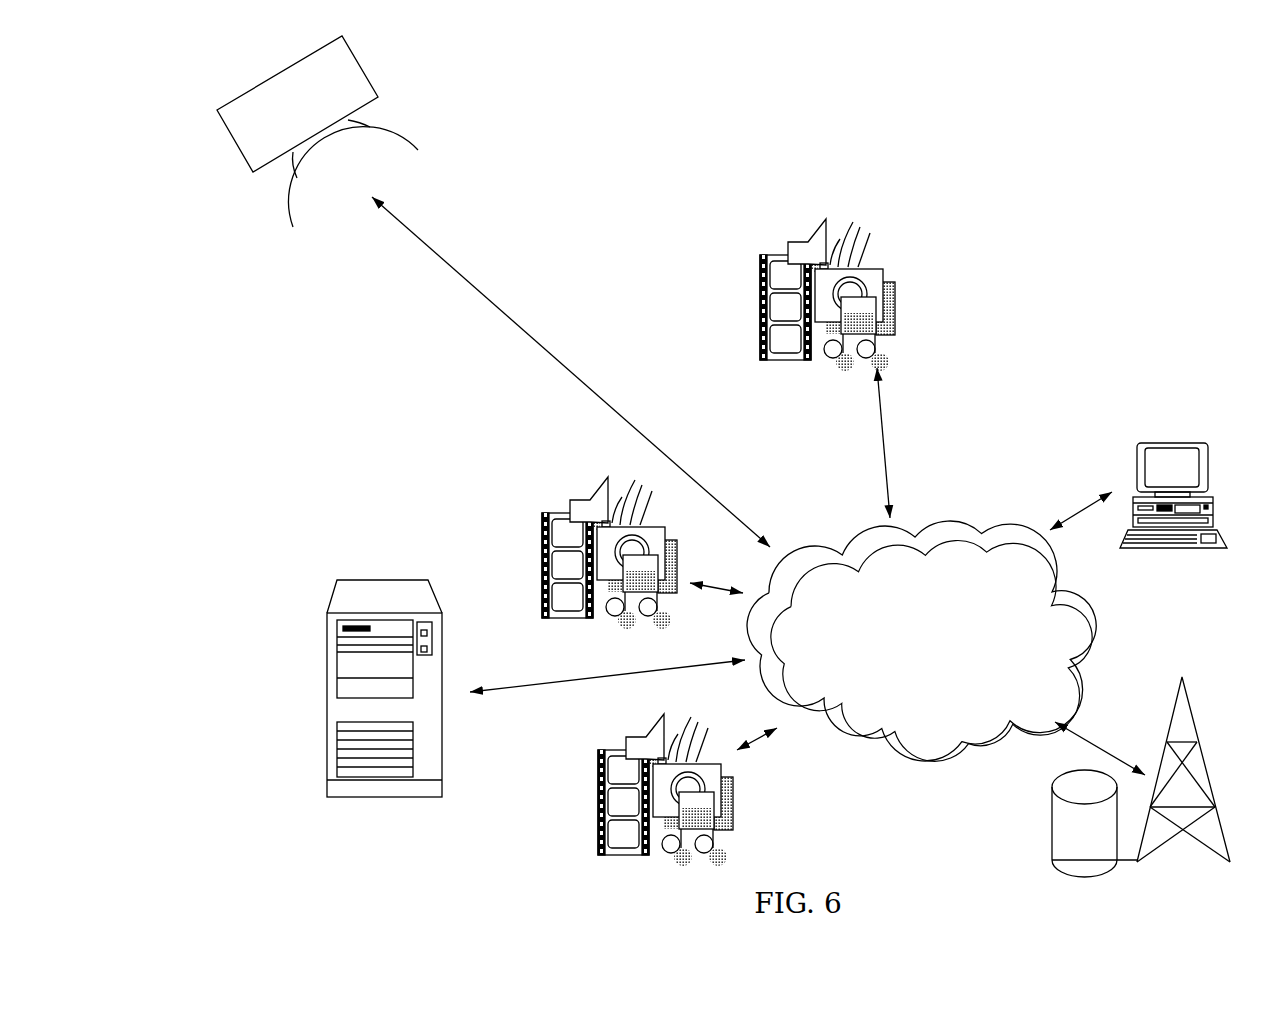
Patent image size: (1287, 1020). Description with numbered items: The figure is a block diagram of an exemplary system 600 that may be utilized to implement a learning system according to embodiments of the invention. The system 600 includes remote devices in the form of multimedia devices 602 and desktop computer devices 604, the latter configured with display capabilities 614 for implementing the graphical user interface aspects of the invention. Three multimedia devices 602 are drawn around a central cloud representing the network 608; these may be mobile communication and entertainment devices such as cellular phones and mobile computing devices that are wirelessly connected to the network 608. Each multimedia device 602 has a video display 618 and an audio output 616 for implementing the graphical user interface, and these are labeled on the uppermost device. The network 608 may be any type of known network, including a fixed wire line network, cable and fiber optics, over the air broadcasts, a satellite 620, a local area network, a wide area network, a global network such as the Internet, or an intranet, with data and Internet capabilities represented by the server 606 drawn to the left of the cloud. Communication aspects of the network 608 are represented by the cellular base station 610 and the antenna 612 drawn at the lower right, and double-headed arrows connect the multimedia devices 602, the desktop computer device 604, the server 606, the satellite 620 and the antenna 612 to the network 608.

The system 600 is at (995, 198).
The multimedia devices 602 is at (676, 520).
The desktop computer devices 604 is at (1192, 483).
The server 606 is at (327, 735).
The network 608 is at (898, 727).
The cellular base station 610 is at (1053, 842).
The antenna 612 is at (1160, 770).
The display capabilities 614 is at (1183, 458).
The audio outputs 616 is at (798, 212).
The video displays 618 is at (734, 305).
The satellite 620 is at (237, 143).